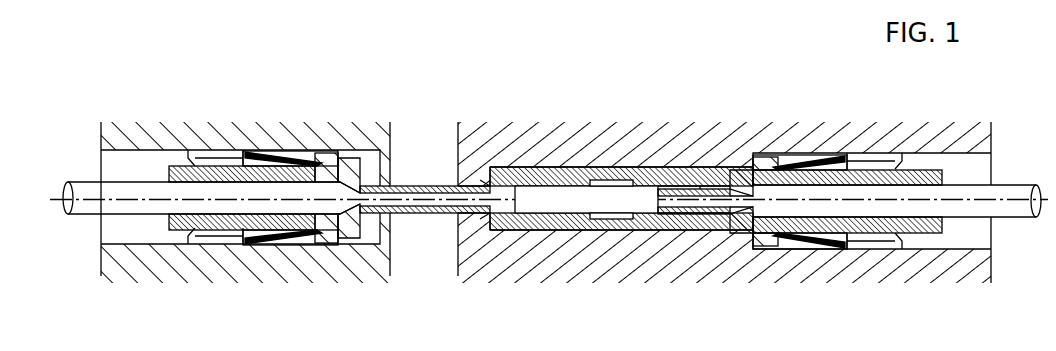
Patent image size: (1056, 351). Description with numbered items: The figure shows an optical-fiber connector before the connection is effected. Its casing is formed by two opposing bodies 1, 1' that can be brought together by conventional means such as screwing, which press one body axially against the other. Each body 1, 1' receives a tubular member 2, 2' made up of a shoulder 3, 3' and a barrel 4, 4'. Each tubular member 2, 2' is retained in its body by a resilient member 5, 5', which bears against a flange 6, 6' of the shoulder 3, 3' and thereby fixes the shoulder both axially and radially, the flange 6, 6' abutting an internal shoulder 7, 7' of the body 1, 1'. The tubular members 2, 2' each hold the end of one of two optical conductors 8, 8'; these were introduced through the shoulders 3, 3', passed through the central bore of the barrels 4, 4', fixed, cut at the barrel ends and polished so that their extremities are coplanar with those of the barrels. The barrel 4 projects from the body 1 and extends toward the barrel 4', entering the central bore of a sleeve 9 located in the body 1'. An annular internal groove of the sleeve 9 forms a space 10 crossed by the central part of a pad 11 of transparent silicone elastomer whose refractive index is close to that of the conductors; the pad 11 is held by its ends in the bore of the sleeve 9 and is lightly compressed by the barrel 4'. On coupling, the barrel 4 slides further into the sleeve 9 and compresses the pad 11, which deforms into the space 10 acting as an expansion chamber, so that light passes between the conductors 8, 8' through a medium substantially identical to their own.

The body 1 is at (245, 170).
The body 1' is at (724, 163).
The tubular member 2 is at (350, 238).
The tubular member 2' is at (743, 240).
The shoulder 3 is at (225, 235).
The shoulder 3' is at (874, 238).
The barrel 4 is at (425, 254).
The barrel 4' is at (705, 133).
The resilient member 5 is at (290, 152).
The resilient member 5' is at (812, 153).
The flange 6 is at (246, 244).
The flange 6' is at (847, 244).
The internal shoulder 7 is at (340, 245).
The internal shoulder 7' is at (757, 255).
The optical conductor 8 is at (496, 248).
The optical conductor 8' is at (712, 150).
The sleeve 9 is at (545, 166).
The space 10 is at (621, 219).
The pad 11 is at (605, 186).